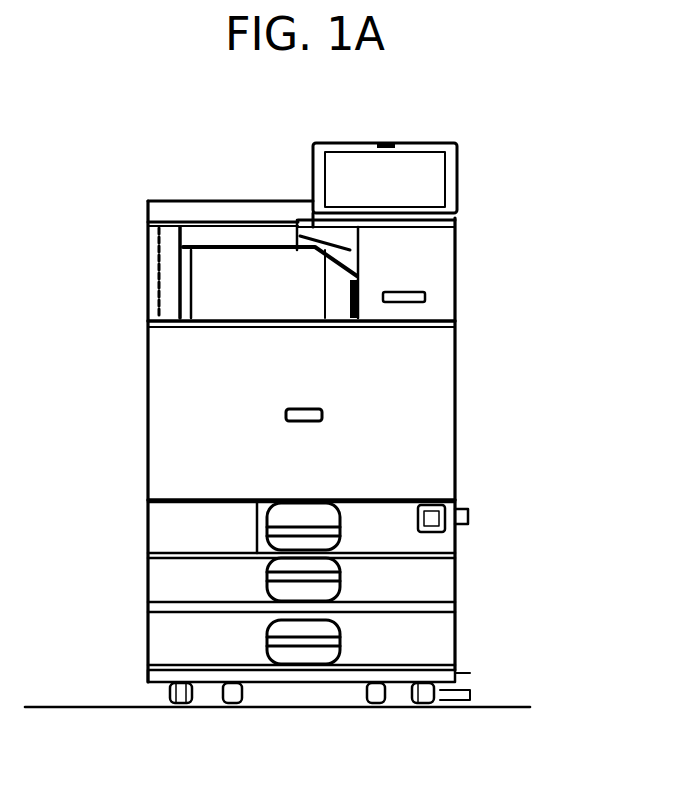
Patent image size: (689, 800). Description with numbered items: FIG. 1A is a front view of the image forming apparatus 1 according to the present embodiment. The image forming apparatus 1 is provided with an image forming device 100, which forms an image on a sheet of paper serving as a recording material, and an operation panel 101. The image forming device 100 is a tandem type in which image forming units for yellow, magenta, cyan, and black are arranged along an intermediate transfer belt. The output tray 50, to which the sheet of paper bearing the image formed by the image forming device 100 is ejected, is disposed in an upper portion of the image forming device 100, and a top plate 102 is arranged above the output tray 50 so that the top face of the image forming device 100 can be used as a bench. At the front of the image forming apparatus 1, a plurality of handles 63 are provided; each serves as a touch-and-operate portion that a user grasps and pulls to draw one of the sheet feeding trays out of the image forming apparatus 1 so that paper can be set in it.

The image forming apparatus 1 is at (203, 188).
The image forming device 100 is at (460, 423).
The operation panel 101 is at (457, 172).
The top plate 102 is at (148, 212).
The output tray 50 is at (225, 320).
The handles 63 is at (270, 516).